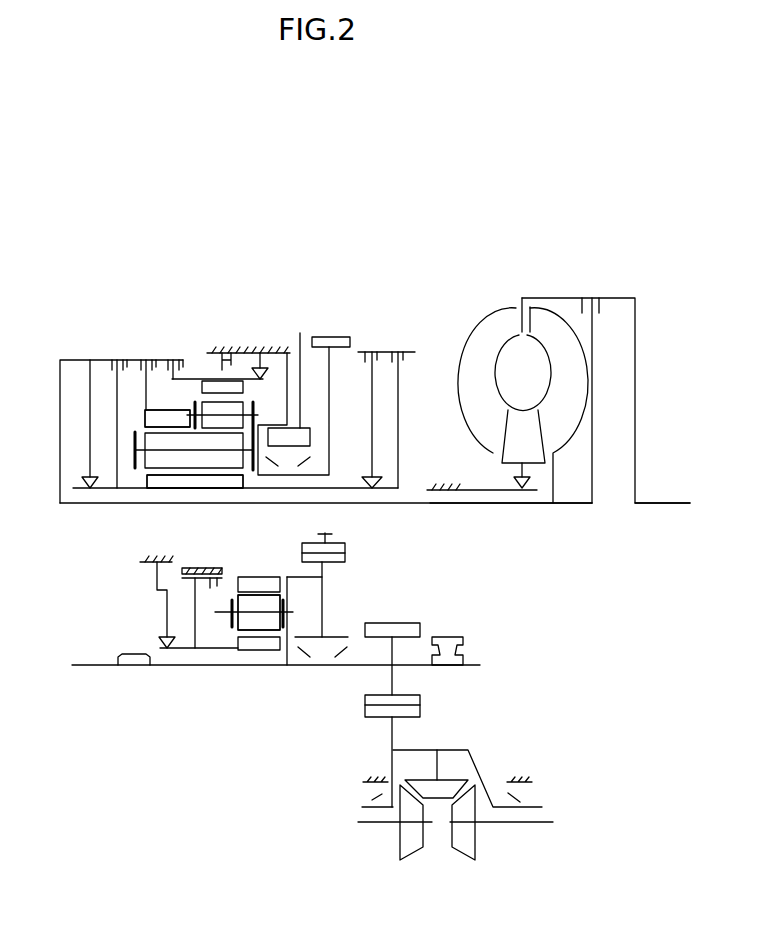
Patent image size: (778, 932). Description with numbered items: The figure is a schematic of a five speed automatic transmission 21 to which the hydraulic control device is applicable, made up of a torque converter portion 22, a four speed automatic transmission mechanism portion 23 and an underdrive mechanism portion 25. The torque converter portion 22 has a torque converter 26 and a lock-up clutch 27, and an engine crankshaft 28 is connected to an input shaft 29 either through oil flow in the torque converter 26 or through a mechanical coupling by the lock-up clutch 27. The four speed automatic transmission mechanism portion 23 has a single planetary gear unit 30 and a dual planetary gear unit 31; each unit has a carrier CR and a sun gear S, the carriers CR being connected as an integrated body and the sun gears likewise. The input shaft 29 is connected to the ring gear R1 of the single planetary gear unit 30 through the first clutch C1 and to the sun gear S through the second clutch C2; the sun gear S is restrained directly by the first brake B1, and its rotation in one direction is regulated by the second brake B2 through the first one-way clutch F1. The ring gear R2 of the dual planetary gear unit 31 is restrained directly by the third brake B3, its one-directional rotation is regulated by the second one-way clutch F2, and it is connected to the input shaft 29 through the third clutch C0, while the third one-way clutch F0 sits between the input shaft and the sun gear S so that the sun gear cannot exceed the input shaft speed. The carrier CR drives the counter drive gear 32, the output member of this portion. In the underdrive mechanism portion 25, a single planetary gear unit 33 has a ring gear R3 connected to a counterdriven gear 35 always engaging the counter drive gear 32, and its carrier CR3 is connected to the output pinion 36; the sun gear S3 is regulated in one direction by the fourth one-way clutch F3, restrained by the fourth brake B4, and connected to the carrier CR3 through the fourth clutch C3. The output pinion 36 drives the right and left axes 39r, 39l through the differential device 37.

The five speed automatic transmission 21 is at (96, 265).
The torque converter portion 22 is at (558, 278).
The four speed automatic transmission mechanism portion 23 is at (237, 325).
The underdrive mechanism portion 25 is at (100, 584).
The torque converter 26 is at (502, 332).
The lock-up clutch 27 is at (600, 312).
The engine crankshaft 28 is at (668, 503).
The input shaft 29 is at (517, 504).
The single planetary gear unit 30 is at (165, 387).
The dual planetary gear unit 31 is at (203, 375).
The counter drive gear 32 is at (337, 342).
The single planetary gear unit 33 is at (255, 573).
The counterdriven gear 35 is at (337, 560).
The output pinion 36 is at (400, 627).
The differential device 37 is at (477, 752).
The left axis 39l is at (363, 823).
The right axis 39r is at (527, 823).
The third clutch C0 is at (172, 360).
The first clutch C1 is at (145, 375).
The second clutch C2 is at (117, 414).
The fourth clutch C3 is at (245, 602).
The first brake B1 is at (399, 410).
The second brake B2 is at (386, 405).
The third brake B3 is at (224, 350).
The fourth brake B4 is at (202, 599).
The third one-way clutch F0 is at (95, 424).
The first one-way clutch F1 is at (365, 472).
The second one-way clutch F2 is at (261, 354).
The fourth one-way clutch F3 is at (189, 602).
The ring gear R1 is at (175, 417).
The ring gear R2 is at (217, 387).
The ring gear R3 is at (268, 585).
The carrier CR is at (253, 416).
The carrier CR3 is at (285, 616).
The sun gear S is at (180, 485).
The sun gear S3 is at (262, 645).